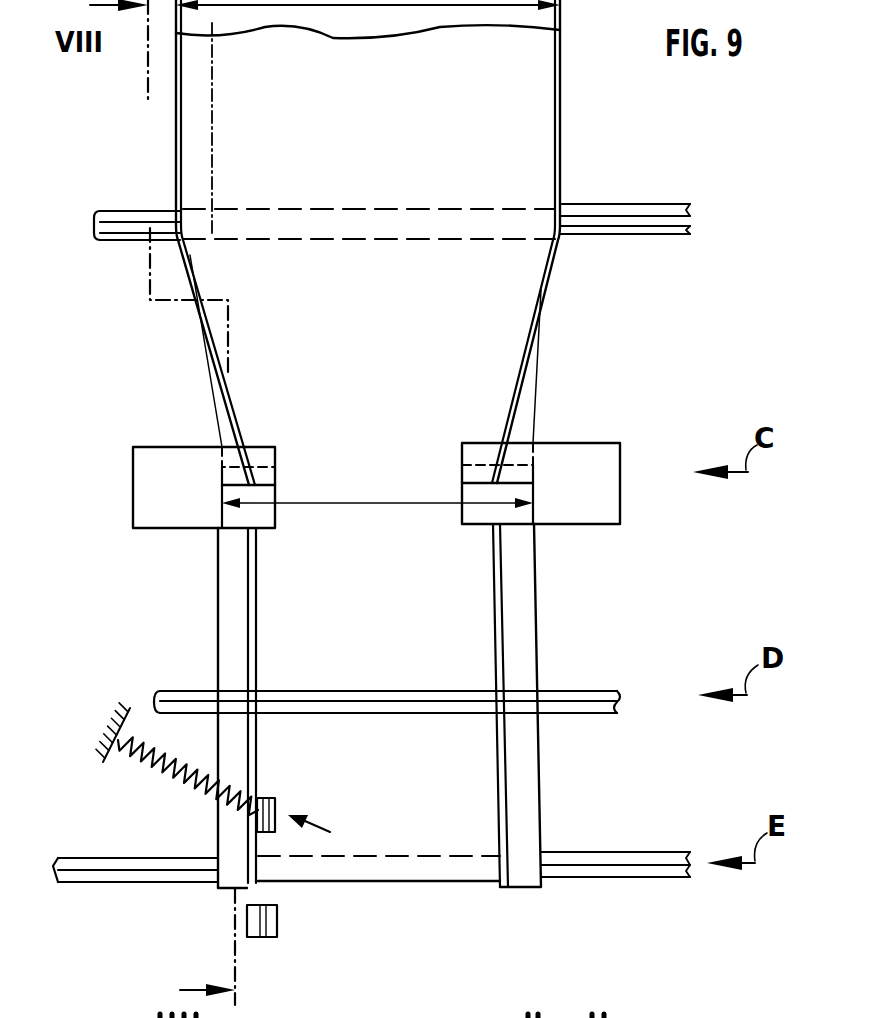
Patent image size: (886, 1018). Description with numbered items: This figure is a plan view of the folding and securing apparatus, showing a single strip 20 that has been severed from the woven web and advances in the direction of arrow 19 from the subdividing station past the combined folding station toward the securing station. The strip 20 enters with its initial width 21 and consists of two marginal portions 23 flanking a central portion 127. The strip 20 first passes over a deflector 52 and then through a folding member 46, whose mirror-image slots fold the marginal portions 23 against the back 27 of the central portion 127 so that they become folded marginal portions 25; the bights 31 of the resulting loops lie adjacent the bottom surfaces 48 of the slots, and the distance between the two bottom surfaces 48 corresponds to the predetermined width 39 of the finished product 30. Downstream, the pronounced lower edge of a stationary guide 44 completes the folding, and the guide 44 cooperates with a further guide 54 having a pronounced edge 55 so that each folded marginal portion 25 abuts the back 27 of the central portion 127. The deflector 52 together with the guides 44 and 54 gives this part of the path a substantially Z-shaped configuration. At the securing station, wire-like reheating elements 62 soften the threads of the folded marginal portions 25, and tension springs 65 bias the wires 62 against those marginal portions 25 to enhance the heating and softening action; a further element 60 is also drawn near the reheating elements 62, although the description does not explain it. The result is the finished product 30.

The arrow 19 is at (428, 300).
The strip 20 is at (540, 48).
The initial width 21 is at (338, 10).
The marginal portions 23 is at (183, 107).
The folded marginal portions 25 is at (244, 560).
The back 27 is at (483, 645).
The finished product 30 is at (432, 883).
The bights 31 is at (218, 658).
The predetermined width 39 is at (363, 502).
The stationary guide 44 is at (603, 695).
The folding member 46 is at (163, 446).
The bottom surfaces 48 is at (210, 474).
The deflector 52 is at (630, 204).
The further guide 54 is at (110, 857).
The edge 55 is at (173, 870).
The stop block 60 is at (278, 800).
The wire-like reheating elements 62 is at (257, 894).
The tension springs 65 is at (149, 765).
The central portion 127 is at (416, 784).